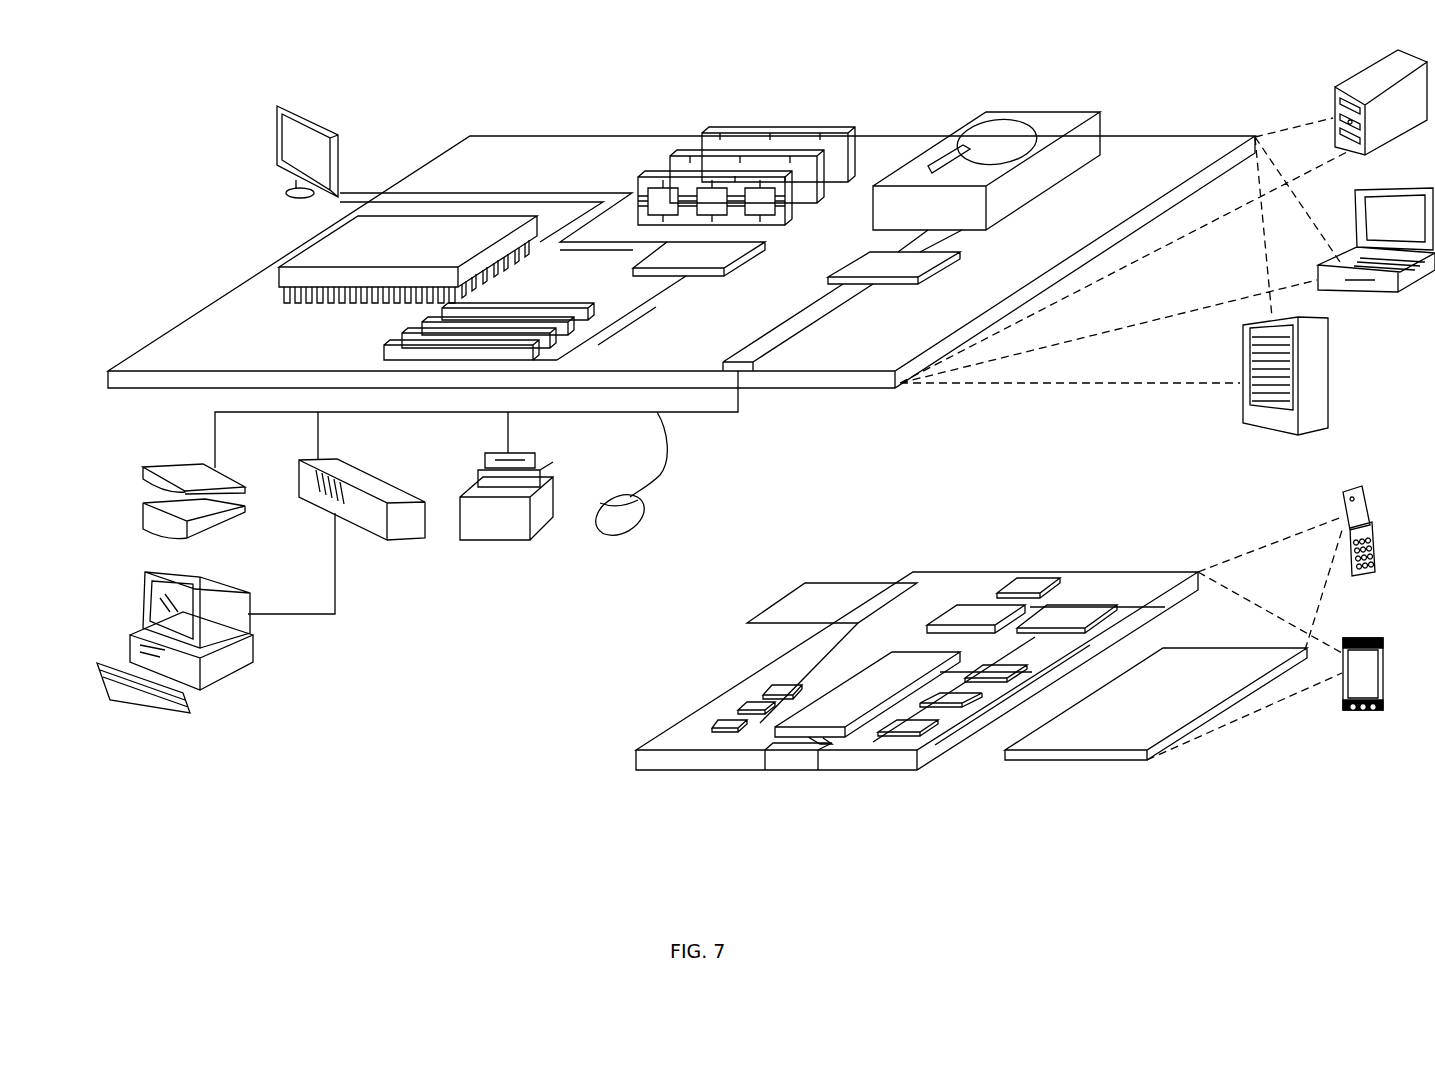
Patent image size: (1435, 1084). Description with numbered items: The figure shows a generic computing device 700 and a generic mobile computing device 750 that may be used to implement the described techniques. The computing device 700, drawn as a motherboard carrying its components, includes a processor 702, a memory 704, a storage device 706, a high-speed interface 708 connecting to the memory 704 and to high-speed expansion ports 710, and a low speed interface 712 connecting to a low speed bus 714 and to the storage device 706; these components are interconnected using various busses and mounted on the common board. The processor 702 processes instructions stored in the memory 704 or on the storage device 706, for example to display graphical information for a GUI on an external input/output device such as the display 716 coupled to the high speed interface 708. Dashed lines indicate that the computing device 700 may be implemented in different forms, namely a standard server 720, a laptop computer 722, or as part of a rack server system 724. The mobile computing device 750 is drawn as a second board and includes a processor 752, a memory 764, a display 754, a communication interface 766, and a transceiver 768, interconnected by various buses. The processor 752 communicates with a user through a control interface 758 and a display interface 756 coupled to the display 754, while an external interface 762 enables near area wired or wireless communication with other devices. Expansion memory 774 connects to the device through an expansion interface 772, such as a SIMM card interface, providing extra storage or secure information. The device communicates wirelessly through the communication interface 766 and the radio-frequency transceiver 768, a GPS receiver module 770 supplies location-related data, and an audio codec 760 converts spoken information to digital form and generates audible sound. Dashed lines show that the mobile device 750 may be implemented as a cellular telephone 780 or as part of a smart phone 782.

The computing device 700 is at (421, 76).
The processor 702 is at (306, 251).
The memory 704 is at (782, 135).
The storage device 706 is at (1031, 110).
The high-speed interface 708 is at (711, 250).
The high-speed expansion ports 710 is at (412, 333).
The low speed interface 712 is at (866, 262).
The low speed bus 714 is at (746, 356).
The display 716 is at (283, 104).
The standard server 720 is at (1356, 78).
The laptop computer 722 is at (1413, 189).
The rack server system 724 is at (1328, 373).
The mobile computing device 750 is at (588, 780).
The processor 752 is at (836, 702).
The display 754 is at (1198, 662).
The display interface 756 is at (917, 723).
The control interface 758 is at (960, 697).
The audio codec 760 is at (1001, 668).
The external interface 762 is at (795, 755).
The memory 764 is at (735, 703).
The communication interface 766 is at (975, 601).
The transceiver 768 is at (1075, 605).
The GPS receiver module 770 is at (1030, 580).
The expansion interface 772 is at (895, 582).
The expansion memory 774 is at (806, 581).
The cellular telephone 780 is at (1352, 490).
The smart phone 782 is at (1357, 636).